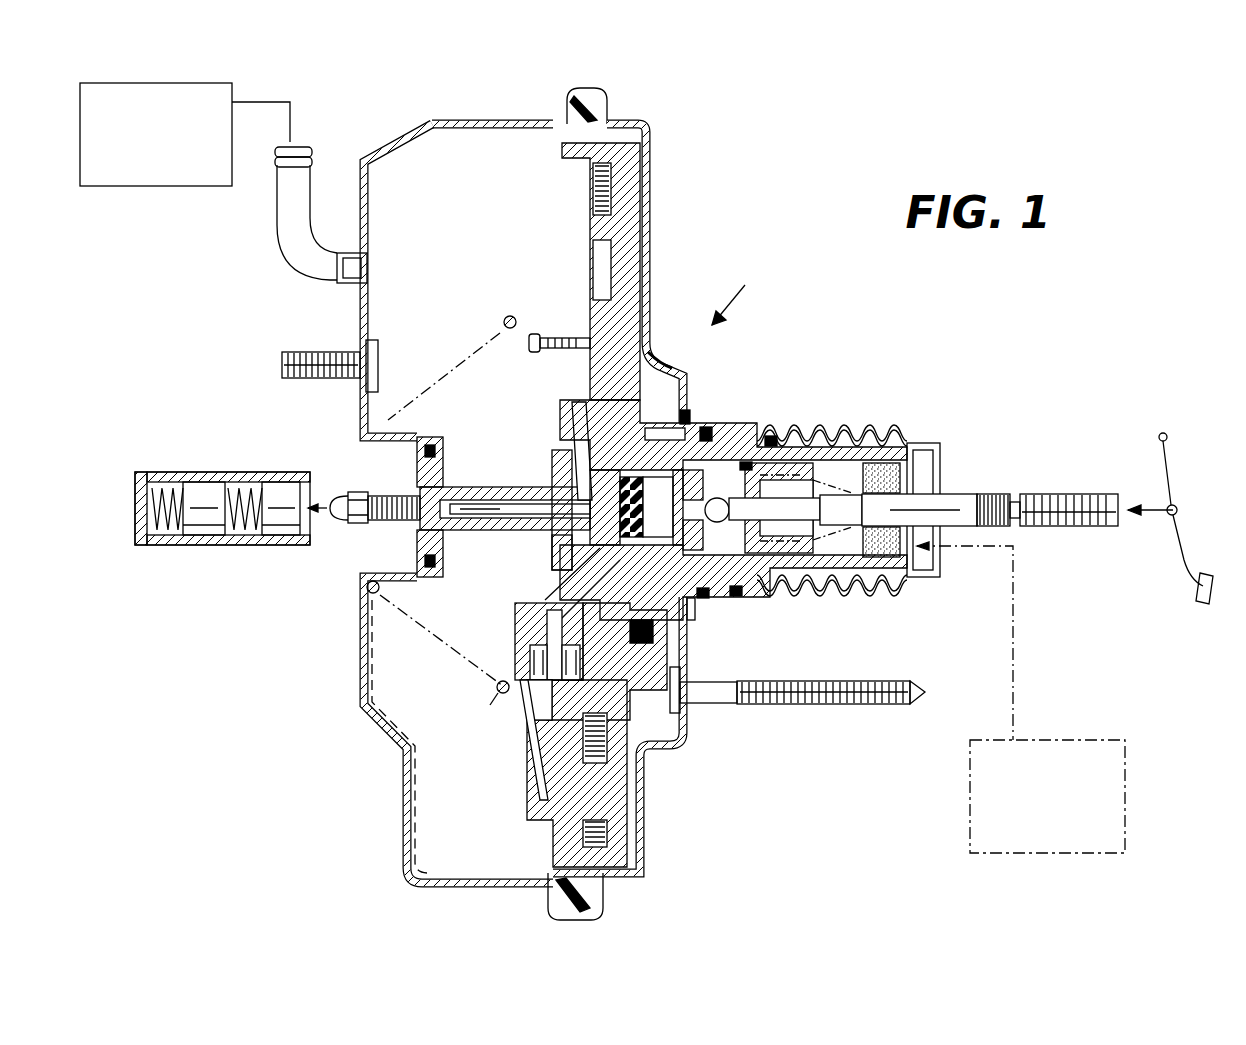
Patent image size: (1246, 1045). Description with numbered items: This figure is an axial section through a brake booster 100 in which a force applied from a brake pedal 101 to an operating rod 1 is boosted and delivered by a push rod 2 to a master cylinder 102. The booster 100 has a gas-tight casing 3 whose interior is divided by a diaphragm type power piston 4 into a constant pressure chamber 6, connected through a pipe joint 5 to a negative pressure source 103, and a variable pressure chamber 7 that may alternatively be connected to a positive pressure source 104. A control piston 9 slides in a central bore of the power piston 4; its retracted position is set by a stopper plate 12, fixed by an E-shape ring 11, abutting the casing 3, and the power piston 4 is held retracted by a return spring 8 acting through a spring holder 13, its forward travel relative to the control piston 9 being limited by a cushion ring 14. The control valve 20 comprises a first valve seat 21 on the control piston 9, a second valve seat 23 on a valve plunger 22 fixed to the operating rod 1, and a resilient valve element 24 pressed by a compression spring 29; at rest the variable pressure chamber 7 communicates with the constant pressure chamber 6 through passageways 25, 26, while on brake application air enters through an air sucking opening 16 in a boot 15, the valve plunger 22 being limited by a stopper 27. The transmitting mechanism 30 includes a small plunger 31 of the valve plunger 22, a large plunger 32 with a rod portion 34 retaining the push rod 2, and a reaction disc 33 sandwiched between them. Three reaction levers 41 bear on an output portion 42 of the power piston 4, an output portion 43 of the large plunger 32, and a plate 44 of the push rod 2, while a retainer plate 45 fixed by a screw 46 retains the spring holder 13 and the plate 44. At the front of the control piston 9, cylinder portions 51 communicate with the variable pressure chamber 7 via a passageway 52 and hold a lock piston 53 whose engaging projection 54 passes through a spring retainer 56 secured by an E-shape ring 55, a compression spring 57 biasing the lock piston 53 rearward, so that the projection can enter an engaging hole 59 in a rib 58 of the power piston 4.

The operating rod 1 is at (960, 497).
The push rod 2 is at (400, 525).
The gas-tight casing 3 is at (515, 118).
The power piston 4 is at (590, 200).
The pipe joint 5 is at (312, 187).
The constant pressure chamber 6 is at (403, 160).
The variable pressure chamber 7 is at (663, 735).
The return spring 8 is at (502, 318).
The control piston 9 is at (795, 450).
The E-shape ring 11 is at (706, 428).
The stopper plate 12 is at (685, 411).
The spring holder 13 is at (532, 795).
The cushion ring 14 is at (610, 661).
The boot 15 is at (850, 432).
The air sucking opening 16 is at (938, 455).
The control valve 20 is at (790, 590).
The first valve seat 21 is at (746, 461).
The valve plunger 22 is at (702, 599).
The second valve seat 23 is at (737, 597).
The valve element 24 is at (771, 436).
The passageway 25 is at (691, 620).
The passageway 26 is at (660, 385).
The stopper 27 is at (659, 510).
The compression spring 29 is at (795, 507).
The transmitting mechanism 30 is at (560, 543).
The small plunger 31 is at (650, 440).
The large plunger 32 is at (570, 555).
The reaction disc 33 is at (600, 445).
The rod portion 34 is at (520, 510).
The reaction lever 41 is at (573, 408).
The output portion 42 is at (590, 430).
The output portion 43 is at (557, 486).
The plate 44 is at (560, 458).
The retainer plate 45 is at (530, 770).
The screw 46 is at (536, 332).
The cylinder portion 51 is at (523, 652).
The passageway 52 is at (520, 600).
The lock piston 53 is at (520, 632).
The engaging projection 54 is at (556, 660).
The E-shape ring 55 is at (556, 677).
The spring retainer 56 is at (535, 692).
The compression spring 57 is at (780, 690).
The rib 58 is at (575, 838).
The engaging hole 59 is at (573, 712).
The booster 100 is at (747, 283).
The brake pedal 101 is at (1174, 462).
The master cylinder 102 is at (280, 547).
The negative pressure source 103 is at (153, 186).
The positive pressure source 104 is at (968, 800).